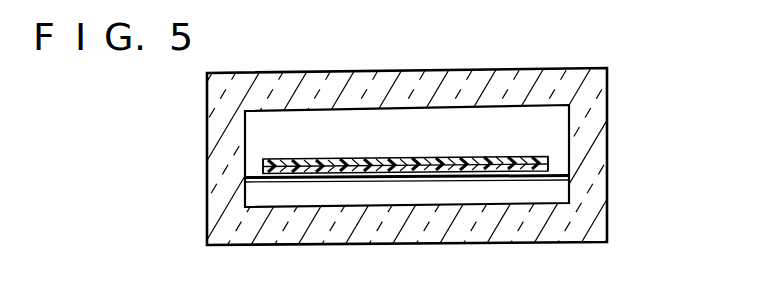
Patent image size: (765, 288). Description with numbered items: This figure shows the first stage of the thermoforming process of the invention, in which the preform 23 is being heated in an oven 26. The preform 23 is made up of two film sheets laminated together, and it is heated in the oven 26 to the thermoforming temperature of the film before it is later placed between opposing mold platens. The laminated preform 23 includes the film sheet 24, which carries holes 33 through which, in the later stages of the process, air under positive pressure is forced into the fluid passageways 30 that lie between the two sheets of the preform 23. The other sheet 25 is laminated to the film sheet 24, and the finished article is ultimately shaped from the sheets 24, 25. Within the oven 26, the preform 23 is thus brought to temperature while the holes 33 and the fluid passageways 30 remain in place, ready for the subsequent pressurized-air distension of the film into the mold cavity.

The oven 26 is at (609, 104).
The preform 23 is at (377, 160).
The sheet 25 is at (260, 161).
The film sheet 24 is at (546, 170).
The holes 33 is at (394, 174).
The fluid passageways 30 is at (366, 171).